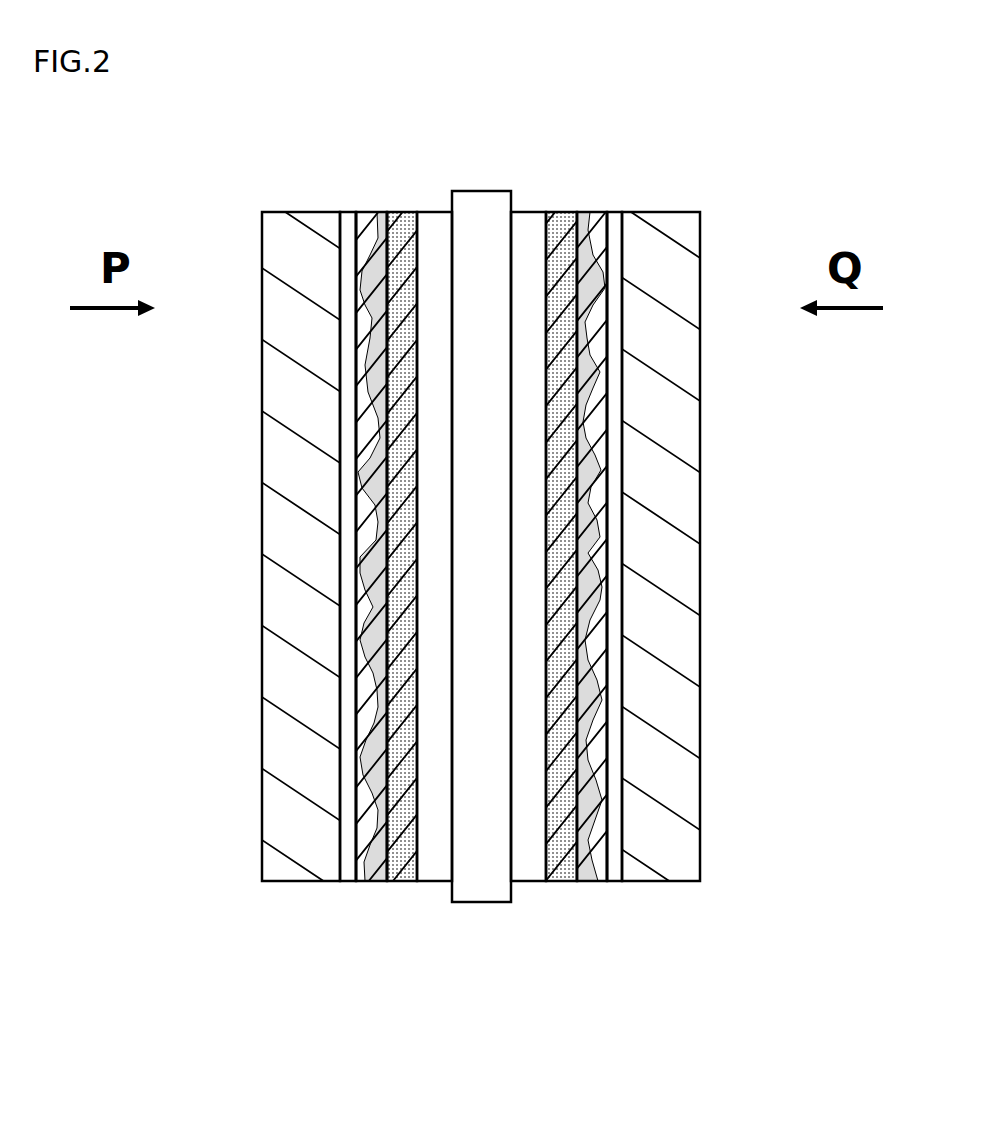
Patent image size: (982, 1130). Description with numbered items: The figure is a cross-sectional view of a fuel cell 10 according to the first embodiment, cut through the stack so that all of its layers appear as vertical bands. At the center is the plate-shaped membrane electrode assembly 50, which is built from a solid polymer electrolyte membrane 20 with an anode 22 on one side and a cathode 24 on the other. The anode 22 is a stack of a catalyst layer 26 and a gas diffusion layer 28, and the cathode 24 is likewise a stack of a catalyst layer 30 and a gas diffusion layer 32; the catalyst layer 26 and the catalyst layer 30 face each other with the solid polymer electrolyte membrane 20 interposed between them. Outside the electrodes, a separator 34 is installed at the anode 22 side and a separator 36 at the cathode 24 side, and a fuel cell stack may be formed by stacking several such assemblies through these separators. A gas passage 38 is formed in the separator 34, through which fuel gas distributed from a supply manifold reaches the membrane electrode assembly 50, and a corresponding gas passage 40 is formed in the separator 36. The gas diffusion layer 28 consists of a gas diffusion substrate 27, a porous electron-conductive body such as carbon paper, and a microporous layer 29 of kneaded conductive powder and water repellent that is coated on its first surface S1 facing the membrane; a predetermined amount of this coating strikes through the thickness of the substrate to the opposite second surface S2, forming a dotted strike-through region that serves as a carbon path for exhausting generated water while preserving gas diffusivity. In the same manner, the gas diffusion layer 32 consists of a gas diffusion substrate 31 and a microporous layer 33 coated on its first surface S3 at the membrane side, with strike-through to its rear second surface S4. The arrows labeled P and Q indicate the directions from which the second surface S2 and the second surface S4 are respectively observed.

The fuel cell 10 is at (786, 938).
The solid polymer electrolyte membrane 20 is at (485, 902).
The anode 22 is at (270, 598).
The cathode 24 is at (690, 588).
The catalyst layer 26 is at (315, 574).
The gas diffusion substrate 27 is at (370, 425).
The gas diffusion layer 28 is at (253, 578).
The microporous layer 29 is at (403, 478).
The catalyst layer 30 is at (645, 570).
The gas diffusion substrate 31 is at (593, 420).
The gas diffusion layer 32 is at (708, 564).
The microporous layer 33 is at (560, 573).
The separator 34 is at (290, 882).
The separator 36 is at (676, 882).
The gas passage 38 is at (347, 212).
The gas passage 40 is at (615, 212).
The membrane electrode assembly 50 is at (480, 577).
The first surface S1 is at (387, 245).
The second surface S2 is at (356, 253).
The first surface S3 is at (577, 245).
The second surface S4 is at (607, 267).